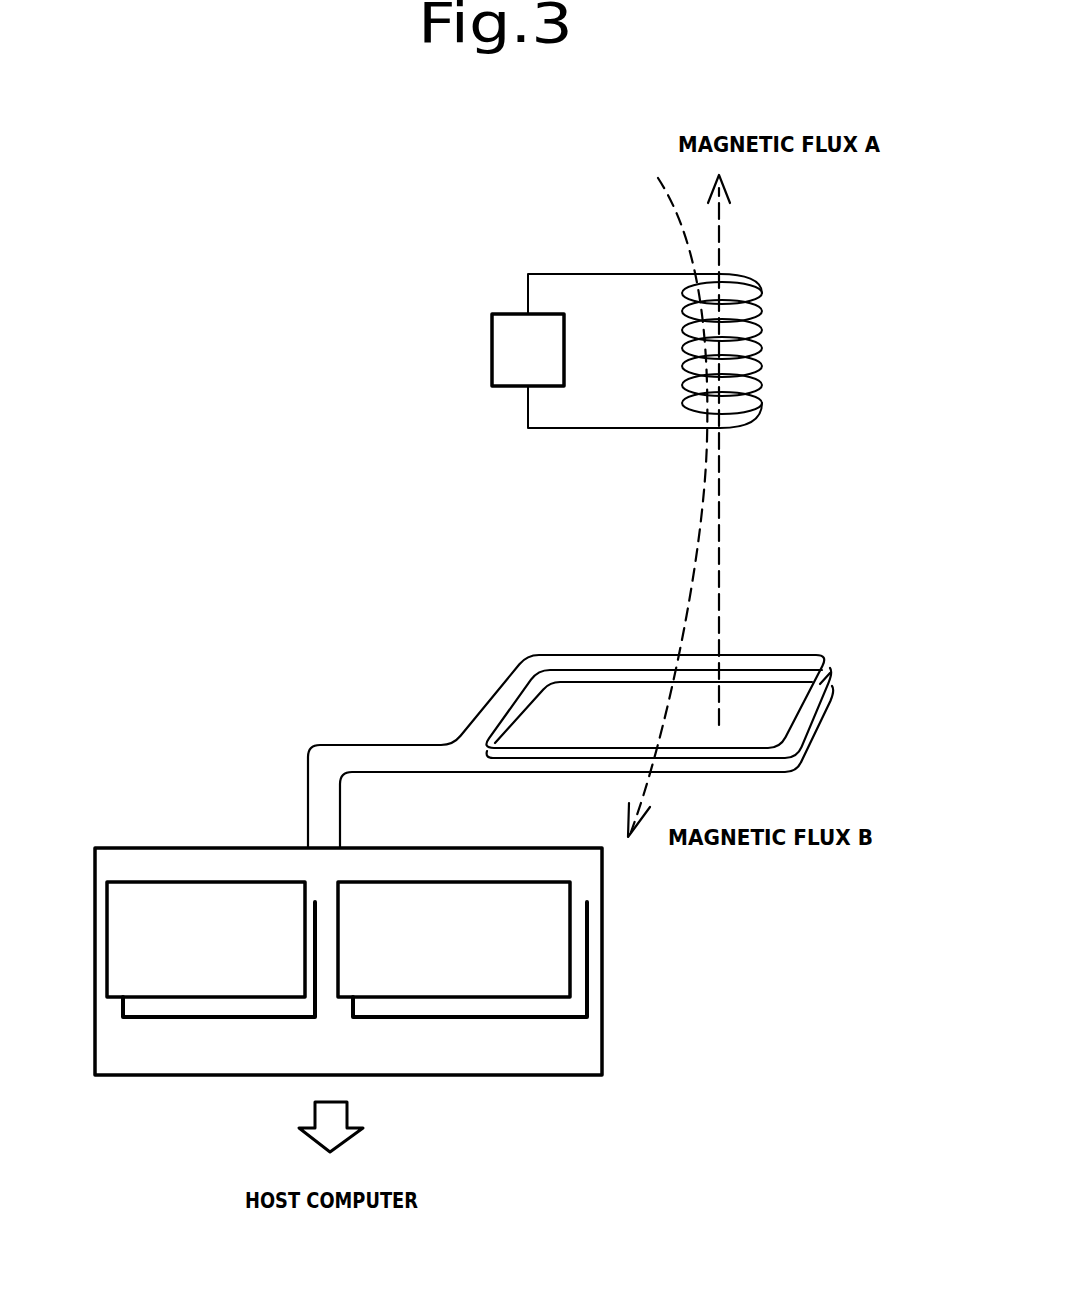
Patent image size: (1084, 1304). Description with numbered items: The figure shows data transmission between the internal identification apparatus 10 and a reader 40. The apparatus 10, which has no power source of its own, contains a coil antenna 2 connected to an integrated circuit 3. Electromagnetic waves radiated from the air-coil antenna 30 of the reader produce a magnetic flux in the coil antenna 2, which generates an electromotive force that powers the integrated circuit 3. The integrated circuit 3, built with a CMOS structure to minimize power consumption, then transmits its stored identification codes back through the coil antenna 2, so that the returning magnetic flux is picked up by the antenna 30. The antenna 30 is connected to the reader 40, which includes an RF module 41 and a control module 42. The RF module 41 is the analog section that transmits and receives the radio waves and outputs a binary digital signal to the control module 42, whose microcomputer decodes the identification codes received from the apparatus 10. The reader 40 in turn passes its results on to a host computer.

The internal identification apparatus 10 is at (470, 228).
The integrated circuit 3 is at (490, 356).
The coil antenna 2 is at (762, 336).
The antenna 30 is at (787, 641).
The reader 40 is at (222, 838).
The RF module 41 is at (228, 997).
The control module 42 is at (447, 997).